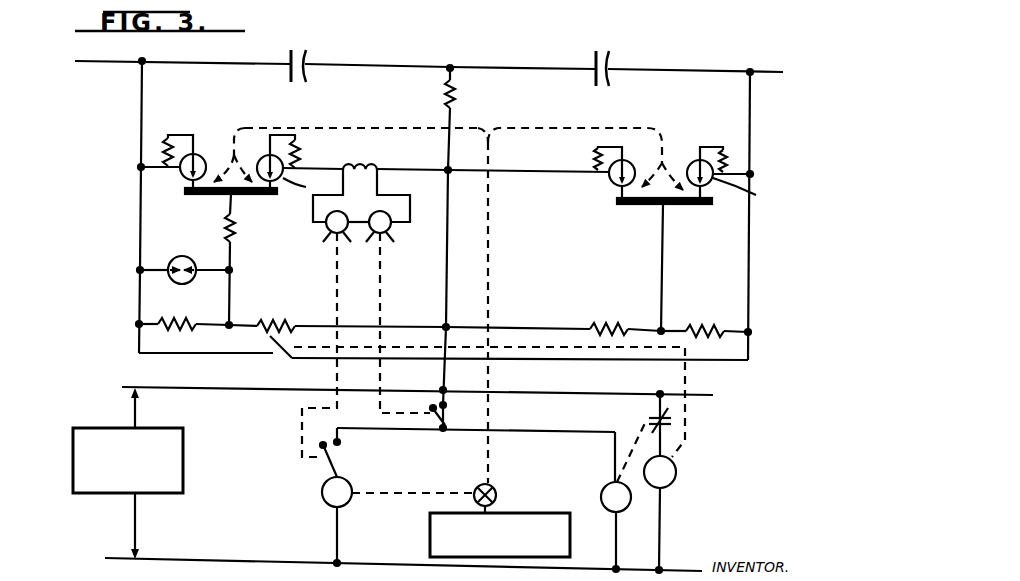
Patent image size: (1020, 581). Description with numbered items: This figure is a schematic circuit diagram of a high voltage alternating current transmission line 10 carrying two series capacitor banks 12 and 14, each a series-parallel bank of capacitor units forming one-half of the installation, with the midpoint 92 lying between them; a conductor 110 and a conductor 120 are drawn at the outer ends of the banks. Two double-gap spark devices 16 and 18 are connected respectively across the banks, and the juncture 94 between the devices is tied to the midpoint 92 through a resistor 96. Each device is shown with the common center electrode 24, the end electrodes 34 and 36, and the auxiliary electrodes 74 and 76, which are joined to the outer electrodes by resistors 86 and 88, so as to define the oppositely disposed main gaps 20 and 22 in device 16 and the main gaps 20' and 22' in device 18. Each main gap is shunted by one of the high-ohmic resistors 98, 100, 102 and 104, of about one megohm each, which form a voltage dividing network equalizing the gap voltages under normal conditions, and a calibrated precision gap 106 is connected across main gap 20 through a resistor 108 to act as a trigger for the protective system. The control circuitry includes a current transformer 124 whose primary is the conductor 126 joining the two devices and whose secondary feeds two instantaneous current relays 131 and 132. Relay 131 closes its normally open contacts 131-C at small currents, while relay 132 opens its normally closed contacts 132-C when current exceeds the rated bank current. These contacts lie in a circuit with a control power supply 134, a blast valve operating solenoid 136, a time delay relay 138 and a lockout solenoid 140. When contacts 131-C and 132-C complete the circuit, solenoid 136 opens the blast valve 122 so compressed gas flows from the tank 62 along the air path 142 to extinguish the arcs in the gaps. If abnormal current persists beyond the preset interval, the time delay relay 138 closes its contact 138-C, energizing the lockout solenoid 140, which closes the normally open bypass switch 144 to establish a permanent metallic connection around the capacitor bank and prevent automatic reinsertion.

The transmission line 10 is at (125, 62).
The conductor 110 is at (145, 63).
The capacitor bank 12 is at (306, 46).
The midpoint 92 is at (450, 68).
The capacitor bank 14 is at (602, 52).
The conductor 120 is at (750, 72).
The resistor 96 is at (452, 115).
The juncture 94 is at (447, 172).
The double-gap device 16 is at (240, 97).
The resistor 86 is at (167, 152).
The auxiliary electrode 74 is at (203, 158).
The auxiliary electrode 76 is at (262, 157).
The resistor 88 is at (303, 152).
The end electrode 36 is at (531, 190).
The main gap 20 is at (171, 197).
The main gap 22 is at (278, 203).
The common center electrode 24 is at (185, 200).
The resistor 108 is at (232, 240).
The calibrated precision gap 106 is at (186, 253).
The current transformer 124 is at (358, 160).
The conductor 126 is at (393, 175).
The instantaneous current relay 132 is at (330, 235).
The instantaneous current relay 131 is at (385, 235).
The air path 142 is at (567, 305).
The end electrode 34 is at (610, 186).
The double-gap device 18 is at (684, 152).
The main gap 20' is at (597, 216).
The main gap 22' is at (714, 216).
The resistor 98 is at (180, 322).
The resistor 100 is at (272, 320).
The resistor 102 is at (626, 310).
The resistor 104 is at (728, 310).
The bypass switch 144 is at (288, 358).
The control power supply 134 is at (184, 467).
The normally open contacts 131-C is at (447, 412).
The normally closed contacts 132-C is at (345, 475).
The blast valve operating solenoid 136 is at (320, 502).
The blast valve 122 is at (493, 485).
The tank 62 is at (543, 512).
The time delay relay 138 is at (610, 506).
The normally open contact pair 138-C is at (648, 421).
The lockout solenoid 140 is at (672, 485).